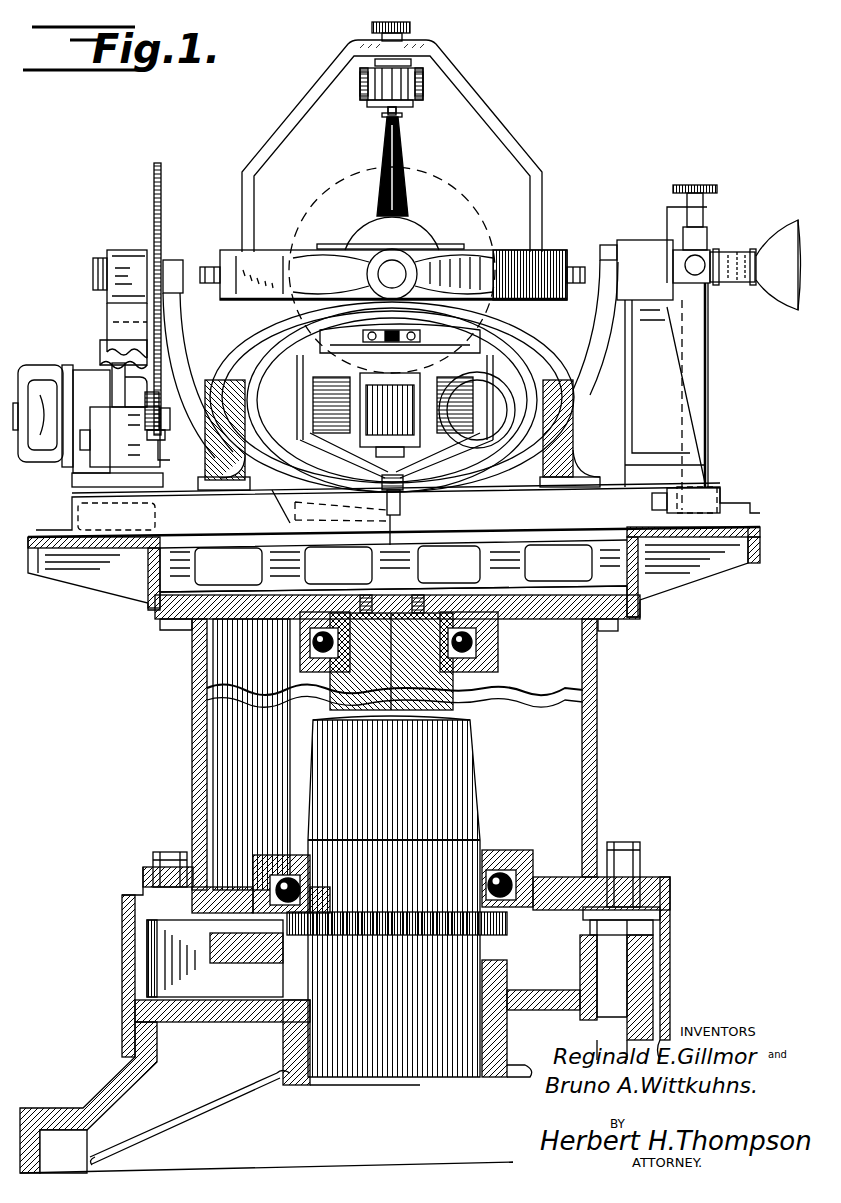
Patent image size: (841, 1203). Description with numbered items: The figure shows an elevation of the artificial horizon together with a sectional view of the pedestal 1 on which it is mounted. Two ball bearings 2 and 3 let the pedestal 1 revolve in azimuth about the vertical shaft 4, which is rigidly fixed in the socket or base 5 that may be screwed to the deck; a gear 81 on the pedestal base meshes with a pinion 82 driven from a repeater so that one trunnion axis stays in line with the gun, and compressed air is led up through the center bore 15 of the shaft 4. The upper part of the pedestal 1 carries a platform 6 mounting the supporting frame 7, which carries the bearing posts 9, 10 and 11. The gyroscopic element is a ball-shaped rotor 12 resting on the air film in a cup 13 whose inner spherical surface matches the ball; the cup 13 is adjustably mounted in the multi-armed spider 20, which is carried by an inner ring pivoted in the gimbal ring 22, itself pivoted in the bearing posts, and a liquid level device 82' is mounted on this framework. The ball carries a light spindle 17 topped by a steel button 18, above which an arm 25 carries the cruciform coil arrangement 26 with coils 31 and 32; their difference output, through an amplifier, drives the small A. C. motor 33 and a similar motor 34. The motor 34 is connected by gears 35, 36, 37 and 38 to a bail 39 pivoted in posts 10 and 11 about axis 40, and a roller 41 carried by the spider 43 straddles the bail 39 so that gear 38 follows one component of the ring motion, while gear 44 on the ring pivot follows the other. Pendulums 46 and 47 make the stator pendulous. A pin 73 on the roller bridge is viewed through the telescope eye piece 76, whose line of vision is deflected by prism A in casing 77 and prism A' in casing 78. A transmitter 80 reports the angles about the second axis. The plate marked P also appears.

The pedestal 1 is at (598, 770).
The ball bearing 2 is at (503, 850).
The ball bearing 3 is at (478, 645).
The vertical shaft 4 is at (479, 771).
The socket or base 5 is at (115, 1085).
The platform 6 is at (762, 549).
The supporting frame 7 is at (72, 512).
The bearing post 9 is at (565, 447).
The bearing post 10 is at (110, 332).
The bearing post 11 is at (688, 430).
The ball-shaped rotor 12 is at (415, 238).
The cup 13 is at (430, 314).
The center bore 15 is at (388, 702).
The spindle 17 is at (398, 182).
The steel button 18 is at (380, 110).
The multi-armed spider 20 is at (297, 348).
The gimbal ring 22 is at (553, 250).
The arm 25 is at (512, 137).
The cruciform coil arrangement 26 is at (405, 70).
The coil 31 is at (364, 86).
The coil 32 is at (418, 88).
The A. C. motor 33 is at (536, 356).
The motor 34 is at (103, 410).
The gear 35 is at (162, 438).
The gear 36 is at (160, 400).
The gear 37 is at (170, 425).
The gear 38 is at (162, 210).
The bail 39 is at (193, 345).
The axis 40 is at (93, 279).
The roller 41 is at (405, 490).
The spider 43 is at (406, 416).
The gear 44 is at (472, 200).
The pendulum 46 is at (268, 385).
The pendulum 47 is at (402, 518).
The pin 73 is at (393, 543).
The telescope eye piece 76 is at (778, 249).
The casing 77 is at (706, 284).
The casing 78 is at (713, 490).
The transmitter 80 is at (60, 378).
The gear 81 is at (210, 957).
The pinion 82 is at (650, 925).
The liquid level device 82' is at (412, 339).
The rectangular prism A is at (666, 357).
The rectangular prism A' is at (697, 529).
The plate P is at (449, 565).